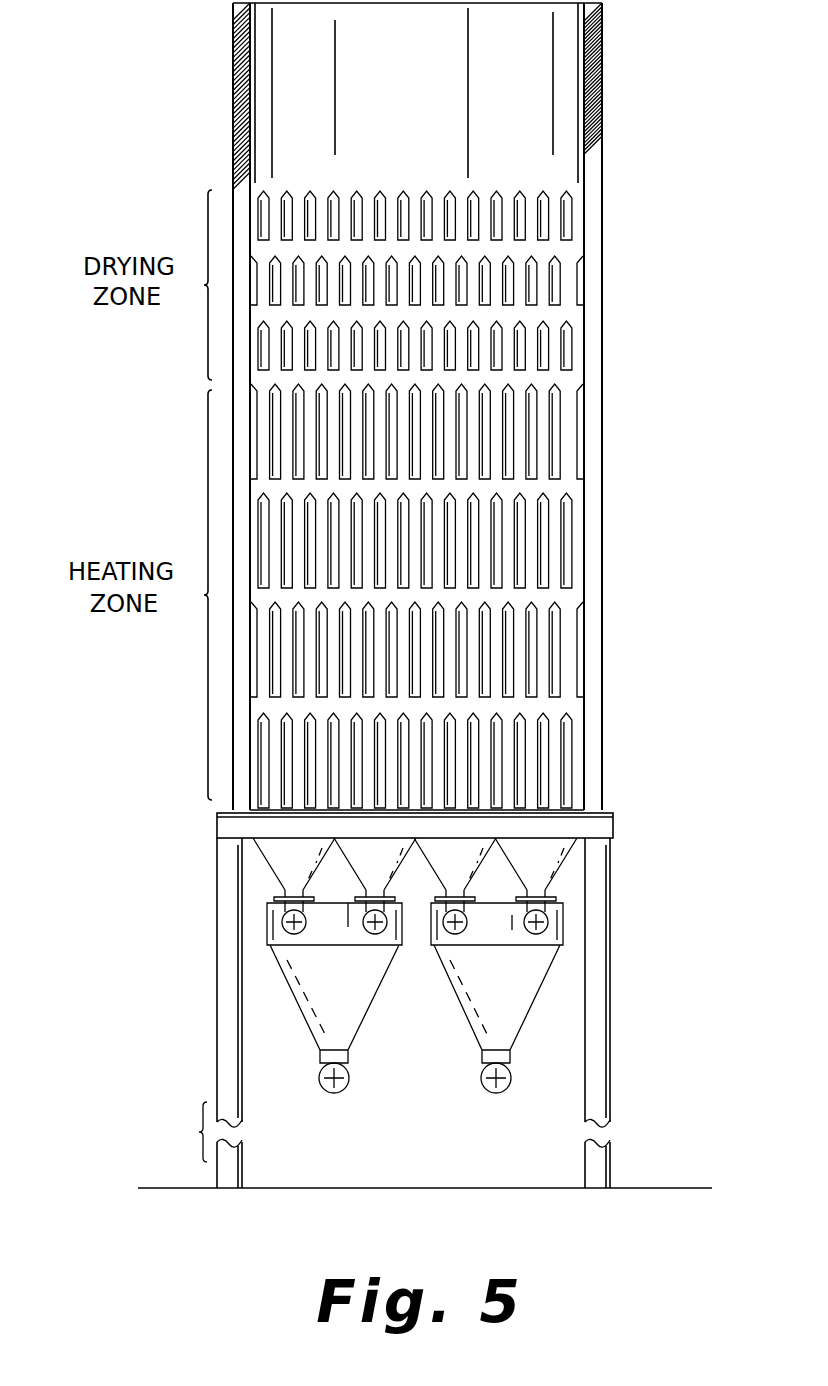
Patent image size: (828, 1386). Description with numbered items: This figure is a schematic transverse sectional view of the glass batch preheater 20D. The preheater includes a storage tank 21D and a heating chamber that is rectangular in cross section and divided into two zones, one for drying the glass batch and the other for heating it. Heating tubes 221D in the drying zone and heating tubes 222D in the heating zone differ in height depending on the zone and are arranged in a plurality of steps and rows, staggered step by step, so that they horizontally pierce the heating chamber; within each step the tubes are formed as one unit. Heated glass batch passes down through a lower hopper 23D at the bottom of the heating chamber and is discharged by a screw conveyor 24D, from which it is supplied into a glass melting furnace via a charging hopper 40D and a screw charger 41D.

The glass batch preheater 20D is at (603, 680).
The storage tank 21D is at (602, 110).
The heating tubes 221D is at (568, 213).
The heating tubes 222D is at (578, 455).
The lower hopper 23D is at (548, 858).
The screw conveyor 24D is at (452, 934).
The charging hopper 40D is at (475, 1027).
The screw charger 41D is at (488, 1098).